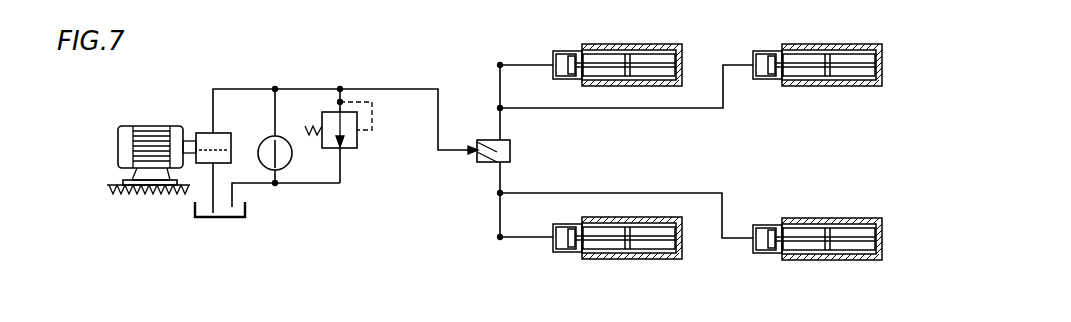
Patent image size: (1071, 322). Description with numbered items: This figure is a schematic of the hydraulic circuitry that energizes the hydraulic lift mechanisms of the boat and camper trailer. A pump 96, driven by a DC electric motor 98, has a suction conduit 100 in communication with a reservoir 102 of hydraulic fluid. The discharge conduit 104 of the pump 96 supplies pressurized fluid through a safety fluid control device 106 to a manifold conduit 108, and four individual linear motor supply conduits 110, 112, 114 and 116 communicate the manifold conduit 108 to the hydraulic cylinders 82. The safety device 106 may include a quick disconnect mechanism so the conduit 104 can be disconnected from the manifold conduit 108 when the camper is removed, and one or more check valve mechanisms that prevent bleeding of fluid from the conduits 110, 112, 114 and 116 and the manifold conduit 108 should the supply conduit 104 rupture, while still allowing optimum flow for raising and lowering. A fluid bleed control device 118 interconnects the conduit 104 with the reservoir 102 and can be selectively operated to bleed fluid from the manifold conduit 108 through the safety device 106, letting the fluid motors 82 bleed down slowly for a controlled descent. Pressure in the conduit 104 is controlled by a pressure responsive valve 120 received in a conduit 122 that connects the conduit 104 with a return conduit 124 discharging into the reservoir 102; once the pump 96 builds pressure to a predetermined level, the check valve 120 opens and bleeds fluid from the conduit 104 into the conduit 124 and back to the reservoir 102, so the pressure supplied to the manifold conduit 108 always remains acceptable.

The hydraulic cylinder 82 is at (565, 52).
The pump 96 is at (203, 140).
The DC electric motor 98 is at (140, 128).
The suction conduit 100 is at (210, 185).
The reservoir 102 is at (243, 213).
The discharge conduit 104 is at (235, 89).
The safety fluid control device 106 is at (482, 163).
The manifold conduit 108 is at (498, 92).
The linear motor supply conduit 110 is at (518, 62).
The linear motor supply conduit 112 is at (547, 108).
The linear motor supply conduit 114 is at (567, 193).
The linear motor supply conduit 116 is at (515, 237).
The fluid bleed control device 118 is at (352, 148).
The pressure responsive valve 120 is at (293, 163).
The conduit 122 is at (277, 115).
The return conduit 124 is at (315, 185).